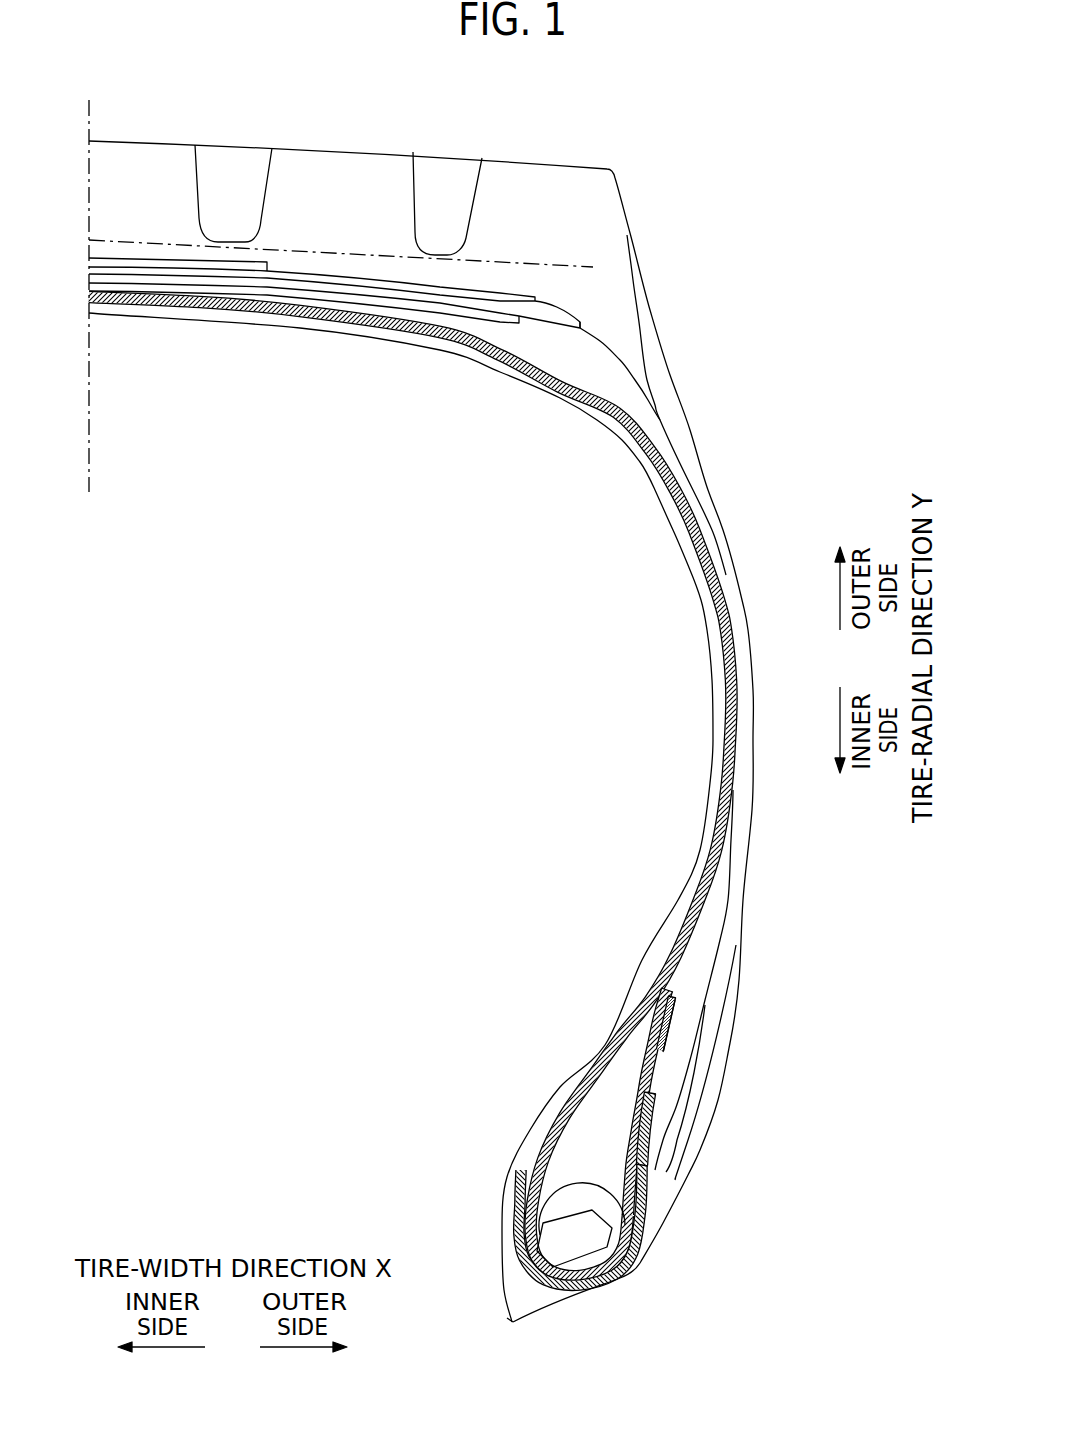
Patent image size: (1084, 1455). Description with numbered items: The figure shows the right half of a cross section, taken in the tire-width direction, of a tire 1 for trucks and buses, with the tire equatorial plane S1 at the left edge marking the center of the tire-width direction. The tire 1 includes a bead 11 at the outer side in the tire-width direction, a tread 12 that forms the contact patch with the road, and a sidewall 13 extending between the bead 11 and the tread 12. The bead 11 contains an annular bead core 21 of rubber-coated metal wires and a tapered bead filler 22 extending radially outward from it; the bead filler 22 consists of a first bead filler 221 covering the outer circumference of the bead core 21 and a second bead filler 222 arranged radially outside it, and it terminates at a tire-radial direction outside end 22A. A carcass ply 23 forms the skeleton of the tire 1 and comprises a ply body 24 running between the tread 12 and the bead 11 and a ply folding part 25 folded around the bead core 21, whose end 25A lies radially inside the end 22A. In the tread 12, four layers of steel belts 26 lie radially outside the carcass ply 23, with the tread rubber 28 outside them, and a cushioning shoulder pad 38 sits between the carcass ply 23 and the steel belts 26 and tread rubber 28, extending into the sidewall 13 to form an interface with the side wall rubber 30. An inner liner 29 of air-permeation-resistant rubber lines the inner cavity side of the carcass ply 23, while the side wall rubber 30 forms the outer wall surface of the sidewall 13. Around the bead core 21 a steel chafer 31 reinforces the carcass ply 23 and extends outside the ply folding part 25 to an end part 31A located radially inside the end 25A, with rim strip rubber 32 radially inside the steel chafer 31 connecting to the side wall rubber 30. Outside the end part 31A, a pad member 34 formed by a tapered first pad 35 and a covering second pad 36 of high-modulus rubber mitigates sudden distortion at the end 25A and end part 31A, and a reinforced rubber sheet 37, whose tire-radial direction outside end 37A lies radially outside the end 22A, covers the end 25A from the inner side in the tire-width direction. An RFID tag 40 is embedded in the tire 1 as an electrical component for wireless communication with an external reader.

The tire 1 is at (807, 106).
The bead 11 is at (792, 1153).
The tread 12 is at (497, 120).
The sidewall 13 is at (746, 478).
The bead core 21 is at (558, 1233).
The bead filler 22 is at (410, 786).
The first bead filler 221 is at (563, 1185).
The second bead filler 222 is at (637, 1070).
The tire-radial direction outside end of the bead filler 22A is at (682, 968).
The carcass ply 23 is at (645, 419).
The ply body 24 is at (637, 443).
The ply folding part 25 is at (632, 1208).
The end of the ply folding part 25A is at (655, 1100).
The steel belts 26 is at (142, 264).
The tread rubber 28 is at (571, 197).
The inner liner 29 is at (716, 704).
The side wall rubber 30 is at (745, 838).
The steel chafer 31 is at (603, 1283).
The end part of the steel chafer 31A is at (657, 1160).
The rim strip rubber 32 is at (520, 1308).
The pad member 34 is at (765, 1062).
The first pad 35 is at (672, 1087).
The second pad 36 is at (690, 1077).
The rubber sheet 37 is at (655, 1068).
The tire-radial direction outside end of the rubber sheet 37A is at (673, 995).
The shoulder pad 38 is at (599, 379).
The RFID tag 40 is at (660, 1028).
The tire equatorial plane S1 is at (92, 452).